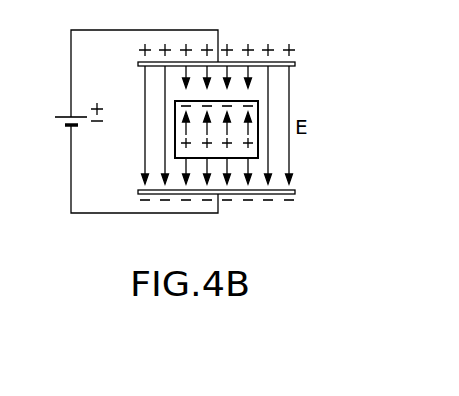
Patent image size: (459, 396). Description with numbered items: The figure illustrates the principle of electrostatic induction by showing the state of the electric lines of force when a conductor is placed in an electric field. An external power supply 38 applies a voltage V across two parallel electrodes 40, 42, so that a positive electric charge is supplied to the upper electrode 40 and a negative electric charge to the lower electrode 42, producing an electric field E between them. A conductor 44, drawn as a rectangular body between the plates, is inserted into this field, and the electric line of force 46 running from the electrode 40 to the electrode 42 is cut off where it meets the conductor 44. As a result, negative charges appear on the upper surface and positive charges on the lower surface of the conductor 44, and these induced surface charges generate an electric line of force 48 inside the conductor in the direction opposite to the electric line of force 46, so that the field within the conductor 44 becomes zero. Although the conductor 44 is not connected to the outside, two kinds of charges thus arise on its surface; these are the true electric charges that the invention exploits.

The external power supply 38 is at (66, 116).
The electrode 40 is at (295, 64).
The electrode 42 is at (295, 191).
The conductor 44 is at (253, 133).
The electric line of force 46 is at (247, 183).
The electric line of force 48 is at (216, 148).